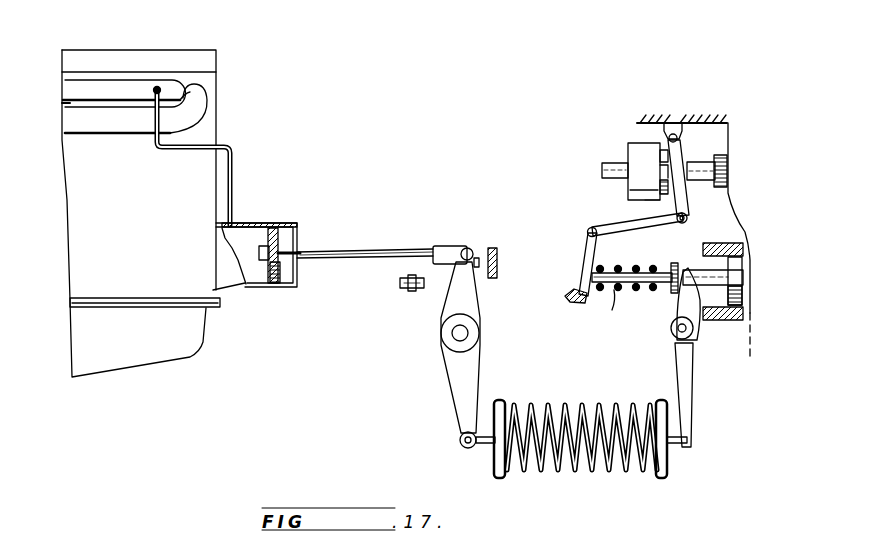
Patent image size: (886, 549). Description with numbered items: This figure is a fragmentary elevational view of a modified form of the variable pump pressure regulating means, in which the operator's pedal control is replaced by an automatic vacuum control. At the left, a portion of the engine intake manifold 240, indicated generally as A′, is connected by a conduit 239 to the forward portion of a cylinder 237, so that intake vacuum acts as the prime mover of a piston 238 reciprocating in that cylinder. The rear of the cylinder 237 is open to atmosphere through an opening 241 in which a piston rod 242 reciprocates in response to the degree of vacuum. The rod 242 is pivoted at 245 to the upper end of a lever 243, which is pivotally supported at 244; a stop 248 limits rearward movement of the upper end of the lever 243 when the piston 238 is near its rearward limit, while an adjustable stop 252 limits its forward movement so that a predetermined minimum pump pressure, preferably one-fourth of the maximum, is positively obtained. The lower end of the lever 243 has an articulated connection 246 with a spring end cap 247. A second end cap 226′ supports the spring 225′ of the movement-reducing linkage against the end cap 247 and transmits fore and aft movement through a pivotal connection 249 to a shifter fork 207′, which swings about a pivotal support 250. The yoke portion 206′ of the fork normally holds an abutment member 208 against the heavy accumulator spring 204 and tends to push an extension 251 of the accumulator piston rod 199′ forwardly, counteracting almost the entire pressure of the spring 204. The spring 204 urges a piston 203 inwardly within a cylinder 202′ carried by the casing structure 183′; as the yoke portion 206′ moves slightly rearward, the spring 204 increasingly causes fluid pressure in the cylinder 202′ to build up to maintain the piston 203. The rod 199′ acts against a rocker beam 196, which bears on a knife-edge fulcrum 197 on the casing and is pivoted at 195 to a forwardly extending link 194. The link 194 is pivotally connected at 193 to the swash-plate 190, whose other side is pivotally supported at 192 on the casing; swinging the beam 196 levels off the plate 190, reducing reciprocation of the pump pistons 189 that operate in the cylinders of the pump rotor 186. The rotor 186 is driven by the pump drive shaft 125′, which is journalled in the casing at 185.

The body block A′ is at (130, 57).
The conduit 239 is at (238, 163).
The engine intake manifold 240 is at (74, 94).
The piston 238 is at (273, 225).
The cylinder 237 is at (258, 290).
The opening 241 is at (300, 252).
The piston rod 242 is at (355, 250).
The pivot 245 is at (465, 243).
The stop 248 is at (507, 247).
The adjustable stop 252 is at (408, 290).
The lever 243 is at (462, 360).
The pivotal support 244 is at (480, 335).
The articulated connection 246 is at (459, 441).
The spring end cap 247 is at (494, 458).
The spring 225′ is at (535, 475).
The end cap 226′ is at (667, 462).
The pivotal connection 249 is at (690, 442).
The shifter fork 207′ is at (689, 380).
The pivotal support 250 is at (672, 338).
The extension 251 is at (676, 262).
The heavy spring 204 is at (640, 292).
The abutment member 208 is at (602, 268).
The accumulator piston rod 199′ is at (612, 312).
The rocker beam 196 is at (589, 260).
The pivot 195 is at (592, 227).
The knife-edge fulcrum 197 is at (580, 303).
The link 194 is at (626, 228).
The swash-plate 190 is at (684, 155).
The pivotal connection 193 is at (690, 218).
The pivotal support 192 is at (670, 124).
The casing structure 183′ is at (705, 118).
The journal 185 is at (725, 158).
The pump rotor 186 is at (632, 145).
The pump drive shaft 125′ is at (600, 172).
The pistons 189 is at (660, 200).
The yoke portion 206′ is at (700, 256).
The piston 203 is at (740, 270).
The cylinder 202′ is at (748, 303).